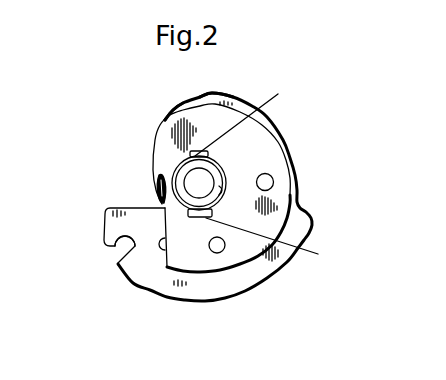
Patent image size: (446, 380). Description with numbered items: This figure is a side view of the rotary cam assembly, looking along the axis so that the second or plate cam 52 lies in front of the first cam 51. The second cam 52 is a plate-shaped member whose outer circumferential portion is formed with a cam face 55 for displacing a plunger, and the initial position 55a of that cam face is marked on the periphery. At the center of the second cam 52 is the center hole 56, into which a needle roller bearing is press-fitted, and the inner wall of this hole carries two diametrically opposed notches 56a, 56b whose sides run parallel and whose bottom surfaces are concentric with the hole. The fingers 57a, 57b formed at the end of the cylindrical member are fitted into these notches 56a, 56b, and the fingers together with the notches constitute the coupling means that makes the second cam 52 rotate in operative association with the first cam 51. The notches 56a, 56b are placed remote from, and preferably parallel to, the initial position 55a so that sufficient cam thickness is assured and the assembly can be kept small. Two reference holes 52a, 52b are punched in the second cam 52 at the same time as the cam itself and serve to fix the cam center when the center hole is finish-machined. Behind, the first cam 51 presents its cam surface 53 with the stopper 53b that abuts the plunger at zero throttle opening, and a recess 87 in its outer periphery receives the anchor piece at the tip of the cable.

The first cam 51 is at (218, 92).
The second cam 52 is at (258, 135).
The reference hole 52a is at (217, 245).
The reference hole 52b is at (265, 183).
The cam surface 53 is at (177, 107).
The stopper 53b is at (118, 207).
The cam face 55 is at (165, 119).
The initial position of cam face 55a is at (163, 205).
The center hole 56 is at (215, 206).
The notch 56a is at (190, 156).
The notch 56b is at (197, 218).
The finger 57a is at (258, 118).
The finger 57b is at (284, 244).
The recess 87 is at (121, 248).